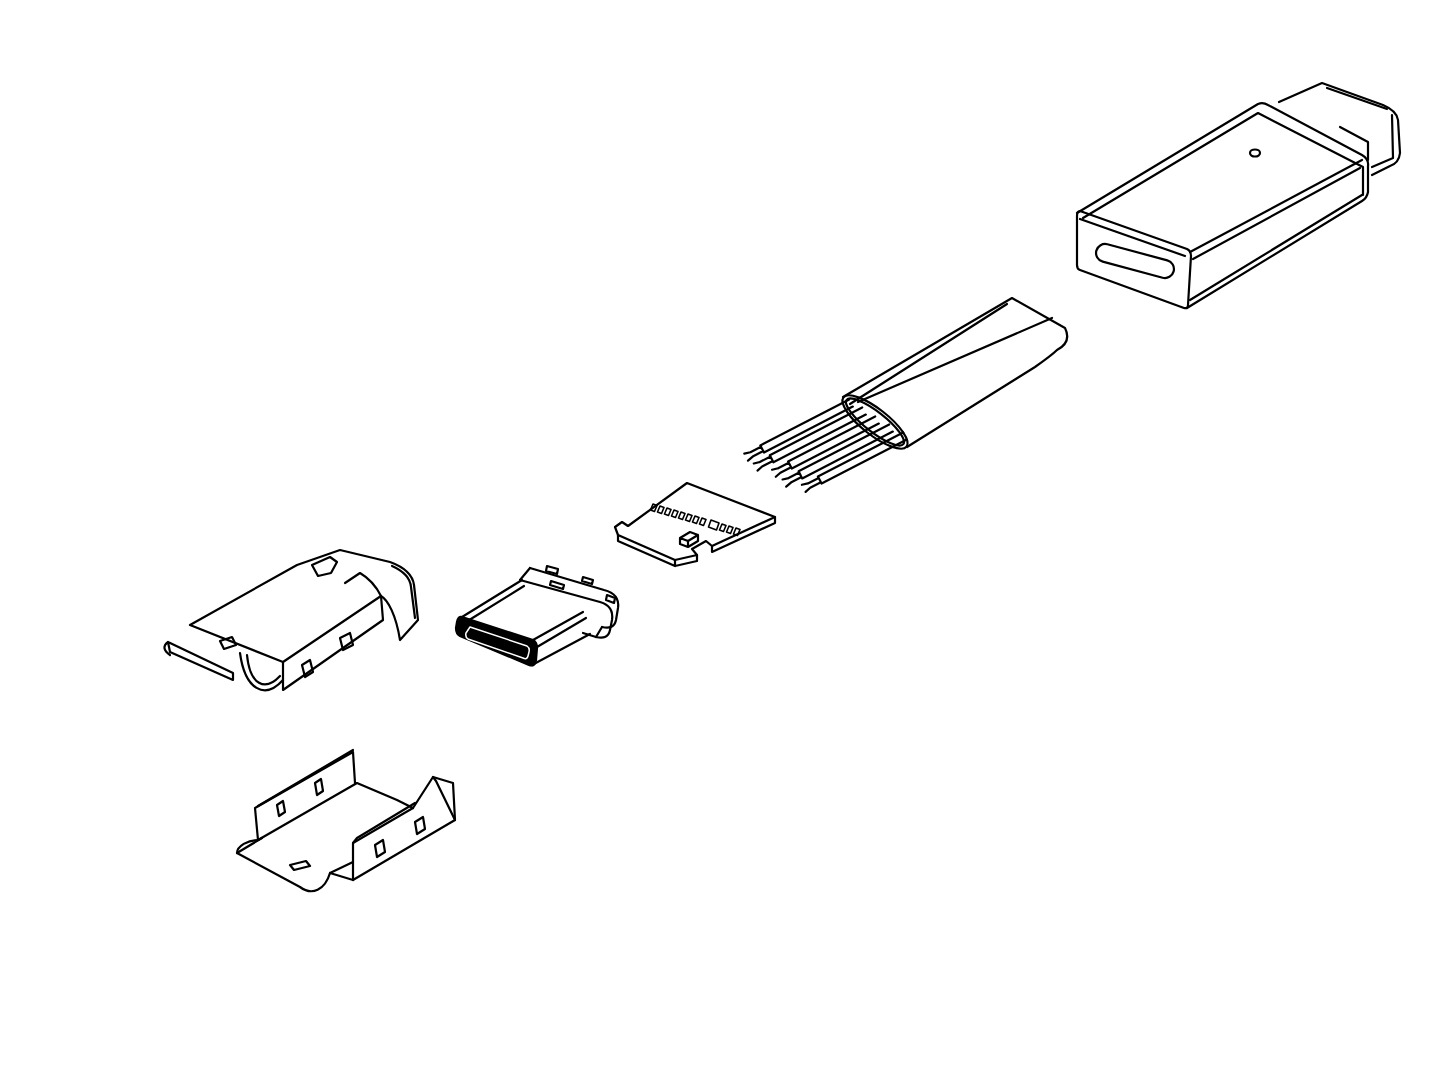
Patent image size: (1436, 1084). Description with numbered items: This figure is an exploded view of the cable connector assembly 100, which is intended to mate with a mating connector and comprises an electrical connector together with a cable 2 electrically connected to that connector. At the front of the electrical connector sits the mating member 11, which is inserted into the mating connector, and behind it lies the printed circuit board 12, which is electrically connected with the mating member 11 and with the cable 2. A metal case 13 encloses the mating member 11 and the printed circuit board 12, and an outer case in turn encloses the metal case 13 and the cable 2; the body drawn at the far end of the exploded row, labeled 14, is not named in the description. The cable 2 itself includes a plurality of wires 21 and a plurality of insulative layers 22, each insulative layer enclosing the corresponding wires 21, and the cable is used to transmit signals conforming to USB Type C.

The cable connector assembly 100 is at (1328, 248).
The adapter body 14 is at (1177, 195).
The cable 2 is at (975, 343).
The insulative layers 22 is at (900, 378).
The wires 21 is at (807, 427).
The printed circuit board 12 is at (650, 528).
The mating member 11 is at (515, 610).
The metal case 13 is at (258, 605).